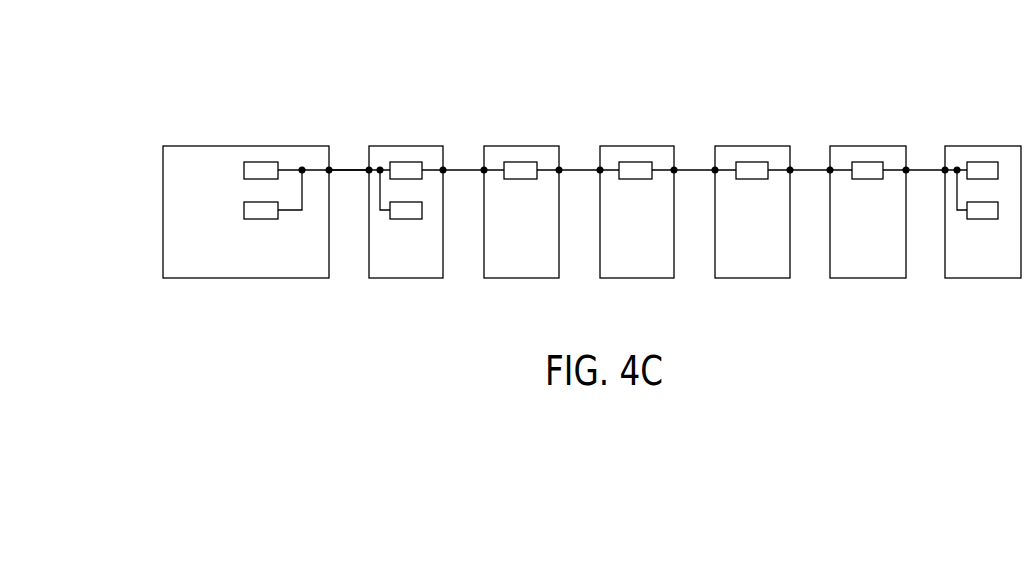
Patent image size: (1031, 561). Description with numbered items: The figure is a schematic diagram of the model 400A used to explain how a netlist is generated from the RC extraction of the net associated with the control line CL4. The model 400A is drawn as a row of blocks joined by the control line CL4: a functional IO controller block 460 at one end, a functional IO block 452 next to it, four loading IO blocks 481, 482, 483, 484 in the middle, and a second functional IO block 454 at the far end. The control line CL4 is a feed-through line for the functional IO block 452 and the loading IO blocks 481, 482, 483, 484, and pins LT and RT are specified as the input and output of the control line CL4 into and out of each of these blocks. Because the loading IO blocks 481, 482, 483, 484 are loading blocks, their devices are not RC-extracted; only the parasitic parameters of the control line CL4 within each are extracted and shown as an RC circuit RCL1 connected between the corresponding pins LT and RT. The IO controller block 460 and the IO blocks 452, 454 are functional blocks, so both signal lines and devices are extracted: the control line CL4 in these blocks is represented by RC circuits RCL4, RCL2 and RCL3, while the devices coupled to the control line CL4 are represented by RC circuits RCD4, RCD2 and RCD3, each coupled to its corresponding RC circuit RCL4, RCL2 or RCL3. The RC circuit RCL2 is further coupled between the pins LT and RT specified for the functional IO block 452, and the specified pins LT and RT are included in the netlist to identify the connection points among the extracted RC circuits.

The model 400A is at (818, 63).
The functional IO controller block 460 is at (246, 223).
The functional IO block 452 is at (406, 223).
The loading IO block 481 is at (522, 279).
The loading IO block 482 is at (638, 279).
The loading IO block 483 is at (753, 279).
The loading IO block 484 is at (870, 279).
The functional IO block 454 is at (983, 223).
The RC circuit RCL4 is at (259, 162).
The RC circuit RCD4 is at (260, 220).
The RC circuit RCL2 is at (405, 162).
The RC circuit RCD2 is at (405, 220).
The RC circuit RCL1 is at (522, 180).
The RC circuit RCL3 is at (983, 162).
The RC circuit RCD3 is at (982, 220).
The control line CL4 is at (348, 170).
The pin RT is at (329, 168).
The pin LT is at (365, 174).